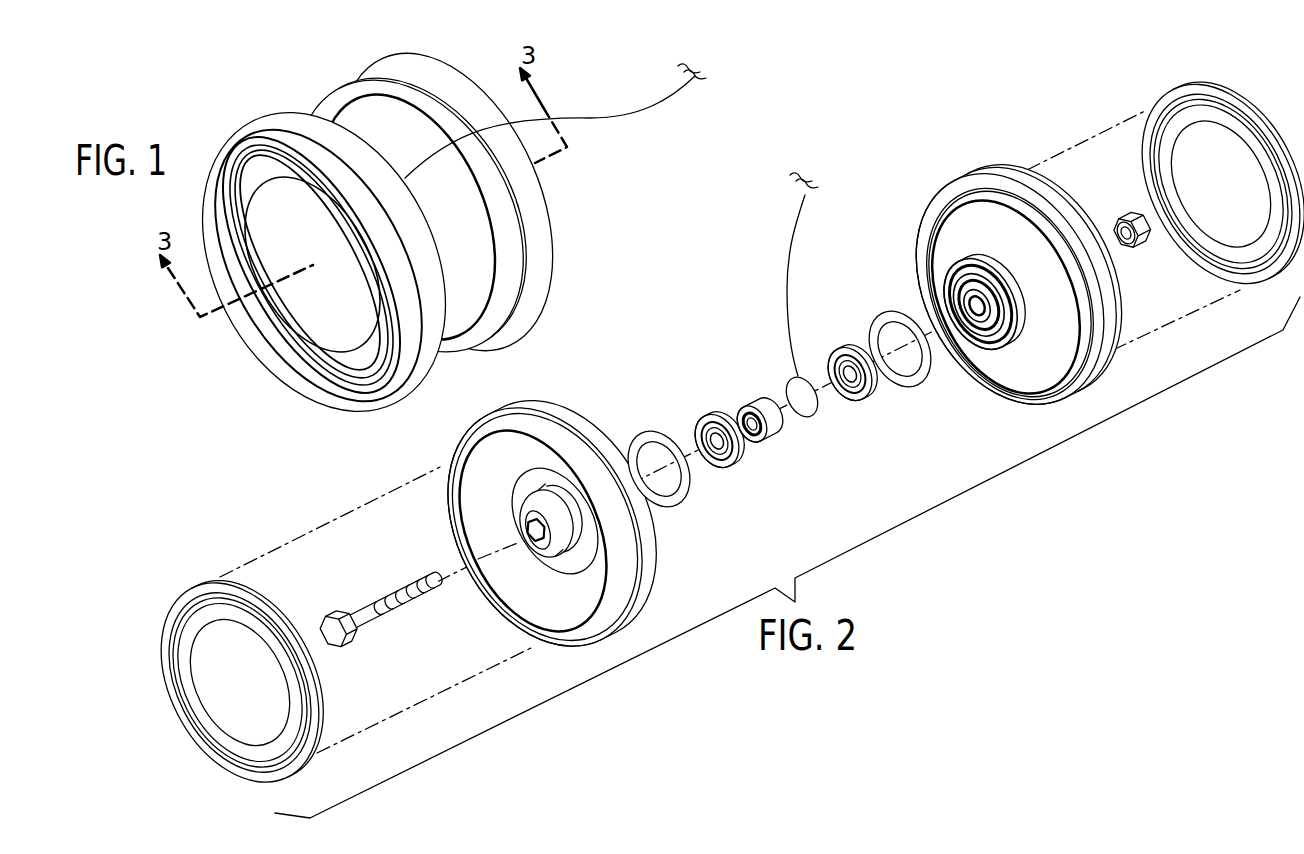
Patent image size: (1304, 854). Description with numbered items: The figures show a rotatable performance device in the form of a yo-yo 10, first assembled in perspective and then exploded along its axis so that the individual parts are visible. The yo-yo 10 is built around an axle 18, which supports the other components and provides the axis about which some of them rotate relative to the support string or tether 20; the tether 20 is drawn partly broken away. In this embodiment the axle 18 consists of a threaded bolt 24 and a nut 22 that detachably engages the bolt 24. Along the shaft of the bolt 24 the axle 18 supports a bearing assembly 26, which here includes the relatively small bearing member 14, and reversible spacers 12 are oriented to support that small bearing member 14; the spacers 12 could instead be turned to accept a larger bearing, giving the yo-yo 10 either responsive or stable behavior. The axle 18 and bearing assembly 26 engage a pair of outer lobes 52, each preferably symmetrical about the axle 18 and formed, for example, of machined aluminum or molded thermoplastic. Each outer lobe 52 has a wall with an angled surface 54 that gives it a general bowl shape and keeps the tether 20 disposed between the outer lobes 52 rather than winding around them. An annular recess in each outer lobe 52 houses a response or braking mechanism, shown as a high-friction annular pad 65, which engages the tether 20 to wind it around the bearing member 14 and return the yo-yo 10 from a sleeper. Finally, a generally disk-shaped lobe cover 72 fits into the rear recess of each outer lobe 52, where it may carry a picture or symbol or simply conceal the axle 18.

In FIG. 1, the yo-yo 10 is at (430, 241).
In FIG. 2, the yo-yo 10 is at (717, 431).
In FIG. 2, the reversible spacers 12 is at (705, 424).
In FIG. 2, the small bearing member 14 is at (757, 395).
In FIG. 2, the axle 18 is at (364, 589).
In FIG. 1, the tether 20 is at (585, 118).
In FIG. 2, the tether 20 is at (783, 262).
In FIG. 2, the nut 22 is at (1125, 212).
In FIG. 2, the threaded bolt 24 is at (408, 583).
In FIG. 2, the bearing assembly 26 is at (769, 418).
In FIG. 1, the outer lobe 52 is at (527, 335).
In FIG. 2, the outer lobe 52 is at (567, 650).
In FIG. 2, the angled surface 54 is at (1005, 390).
In FIG. 2, the high-friction annular pad 65 is at (671, 507).
In FIG. 1, the lobe cover 72 is at (314, 390).
In FIG. 2, the lobe cover 72 is at (298, 766).